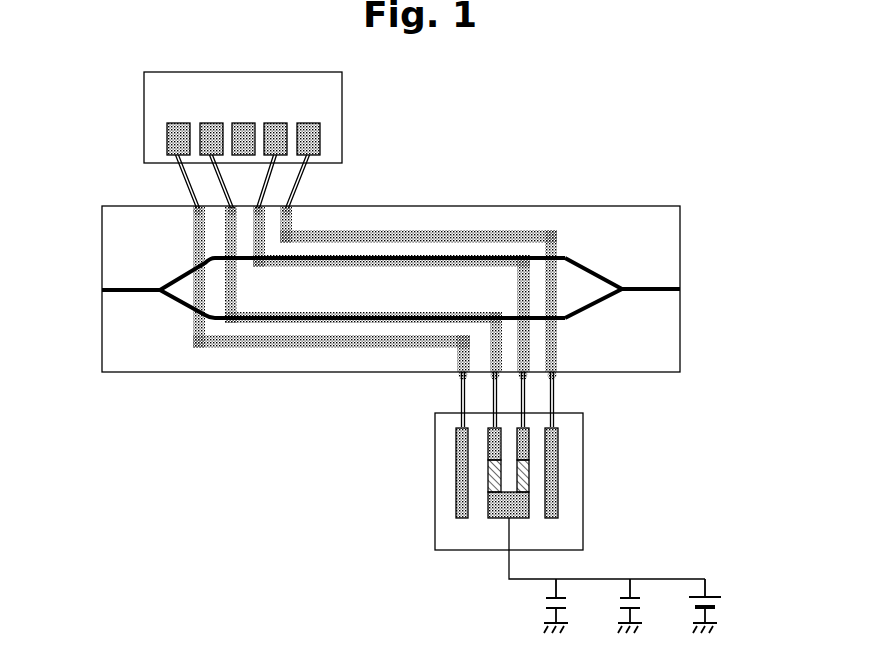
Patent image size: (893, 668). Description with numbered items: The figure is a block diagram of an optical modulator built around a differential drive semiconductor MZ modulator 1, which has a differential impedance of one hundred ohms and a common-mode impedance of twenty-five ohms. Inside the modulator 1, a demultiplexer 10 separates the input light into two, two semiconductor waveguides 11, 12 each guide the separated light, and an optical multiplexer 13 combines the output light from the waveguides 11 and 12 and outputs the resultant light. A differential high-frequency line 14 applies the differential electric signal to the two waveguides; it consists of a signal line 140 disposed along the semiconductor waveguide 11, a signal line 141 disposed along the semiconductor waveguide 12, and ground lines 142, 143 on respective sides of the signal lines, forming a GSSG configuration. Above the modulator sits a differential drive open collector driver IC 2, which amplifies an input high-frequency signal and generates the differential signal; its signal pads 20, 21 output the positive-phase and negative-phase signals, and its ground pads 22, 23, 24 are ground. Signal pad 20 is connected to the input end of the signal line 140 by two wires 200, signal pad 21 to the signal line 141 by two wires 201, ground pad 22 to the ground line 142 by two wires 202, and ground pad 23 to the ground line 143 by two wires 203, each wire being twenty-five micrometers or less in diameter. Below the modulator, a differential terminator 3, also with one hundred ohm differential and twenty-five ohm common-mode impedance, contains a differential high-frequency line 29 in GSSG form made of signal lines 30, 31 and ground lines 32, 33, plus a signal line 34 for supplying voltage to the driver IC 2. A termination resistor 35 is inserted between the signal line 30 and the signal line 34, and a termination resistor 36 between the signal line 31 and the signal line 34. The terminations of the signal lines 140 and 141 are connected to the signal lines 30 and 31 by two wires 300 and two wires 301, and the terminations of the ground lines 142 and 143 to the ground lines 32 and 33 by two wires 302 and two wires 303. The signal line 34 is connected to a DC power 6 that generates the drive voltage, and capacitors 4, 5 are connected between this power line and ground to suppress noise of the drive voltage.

The differential drive semiconductor MZ modulator 1 is at (682, 230).
The differential drive open collector driver IC 2 is at (233, 72).
The differential terminator 3 is at (560, 551).
The capacitor 4 is at (543, 608).
The capacitor 5 is at (618, 608).
The DC power 6 is at (715, 595).
The demultiplexer 10 is at (160, 294).
The semiconductor waveguide 11 is at (577, 258).
The semiconductor waveguide 12 is at (578, 319).
The optical multiplexer 13 is at (624, 283).
The differential high-frequency line 14 is at (391, 289).
The signal pad 20 is at (270, 121).
The signal pad 21 is at (205, 121).
The ground pad 22 is at (302, 121).
The ground pad 23 is at (172, 121).
The ground pad 24 is at (237, 121).
The differential high-frequency line 29 is at (510, 505).
The signal line 30 is at (531, 452).
The signal line 31 is at (486, 448).
The ground line 32 is at (558, 512).
The ground line 33 is at (456, 512).
The signal line 34 is at (497, 520).
The termination resistor 35 is at (531, 480).
The termination resistor 36 is at (486, 480).
The signal line 140 is at (350, 258).
The signal line 141 is at (349, 324).
The ground line 142 is at (438, 232).
The ground line 143 is at (362, 349).
The wire 200 is at (262, 172).
The wire 201 is at (237, 174).
The wire 202 is at (262, 184).
The wire 203 is at (233, 185).
The wire 300 is at (520, 392).
The wire 301 is at (498, 392).
The wire 302 is at (553, 408).
The wire 303 is at (462, 405).